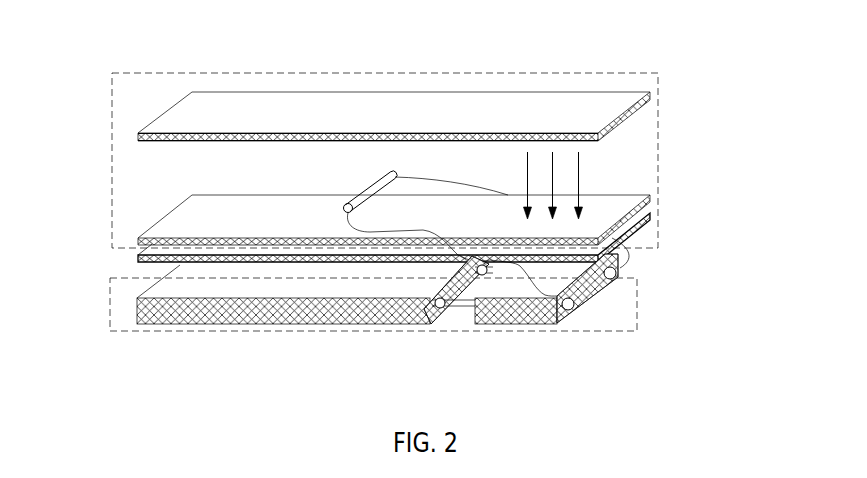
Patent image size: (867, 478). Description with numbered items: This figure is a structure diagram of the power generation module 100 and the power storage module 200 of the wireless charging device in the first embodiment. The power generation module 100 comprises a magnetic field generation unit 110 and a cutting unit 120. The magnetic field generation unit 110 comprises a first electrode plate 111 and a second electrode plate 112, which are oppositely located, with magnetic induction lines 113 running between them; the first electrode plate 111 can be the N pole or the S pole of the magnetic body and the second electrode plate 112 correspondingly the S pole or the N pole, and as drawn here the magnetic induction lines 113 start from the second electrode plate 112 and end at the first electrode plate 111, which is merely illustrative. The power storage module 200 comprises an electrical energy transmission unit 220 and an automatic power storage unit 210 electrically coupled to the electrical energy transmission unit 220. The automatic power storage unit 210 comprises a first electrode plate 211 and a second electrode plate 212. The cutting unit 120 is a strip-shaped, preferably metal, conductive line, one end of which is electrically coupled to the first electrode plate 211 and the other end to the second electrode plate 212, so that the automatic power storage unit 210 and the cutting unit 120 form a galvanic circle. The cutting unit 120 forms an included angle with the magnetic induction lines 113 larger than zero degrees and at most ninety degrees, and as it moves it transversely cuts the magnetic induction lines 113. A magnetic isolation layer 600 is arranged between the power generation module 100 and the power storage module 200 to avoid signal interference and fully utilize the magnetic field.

The power generation module 100 is at (255, 72).
The magnetic field generation unit 110 is at (725, 80).
The first electrode plate 111 is at (617, 212).
The second electrode plate 112 is at (586, 108).
The magnetic induction lines 113 is at (578, 175).
The cutting unit 120 is at (370, 187).
The magnetic isolation layer 600 is at (163, 258).
The power storage module 200 is at (112, 305).
The automatic power storage unit 210 is at (562, 332).
The first electrode plate 211 is at (615, 278).
The second electrode plate 212 is at (572, 307).
The electrical energy transmission unit 220 is at (218, 320).